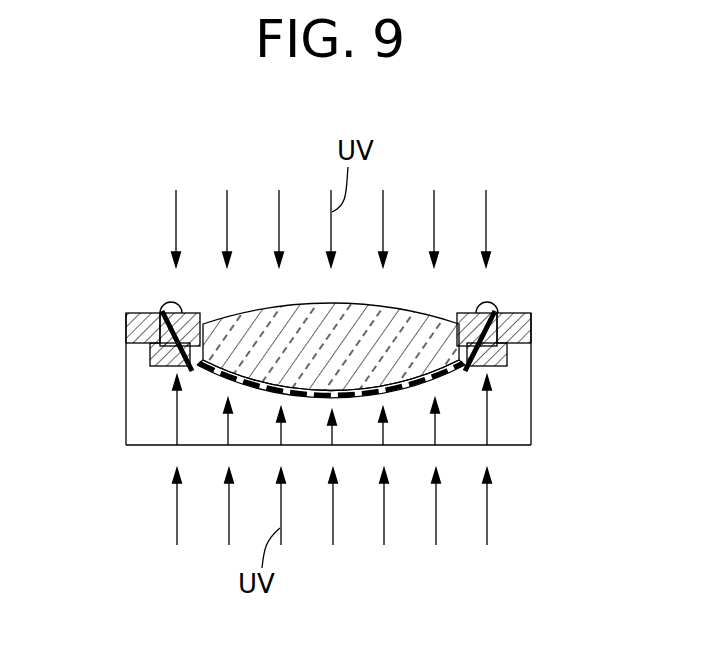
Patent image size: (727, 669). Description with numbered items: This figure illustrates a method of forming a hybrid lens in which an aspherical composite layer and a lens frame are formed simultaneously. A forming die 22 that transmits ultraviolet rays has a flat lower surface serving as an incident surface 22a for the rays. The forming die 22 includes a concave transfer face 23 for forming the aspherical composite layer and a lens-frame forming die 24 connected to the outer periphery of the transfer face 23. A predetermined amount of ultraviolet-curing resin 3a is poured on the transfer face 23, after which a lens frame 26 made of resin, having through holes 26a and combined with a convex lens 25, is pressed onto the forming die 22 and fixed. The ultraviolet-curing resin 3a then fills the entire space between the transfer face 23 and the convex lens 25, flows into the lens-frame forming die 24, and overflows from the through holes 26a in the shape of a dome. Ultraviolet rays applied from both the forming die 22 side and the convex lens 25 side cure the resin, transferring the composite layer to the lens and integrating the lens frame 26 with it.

The ultraviolet-curing resin 3a is at (268, 388).
The forming die 22 is at (142, 412).
The incident surface 22a is at (468, 445).
The transfer face 23 is at (405, 394).
The lens-frame forming die 24 is at (505, 360).
The convex lens 25 is at (387, 335).
The lens frame 26 is at (518, 332).
The through holes 26a is at (509, 313).